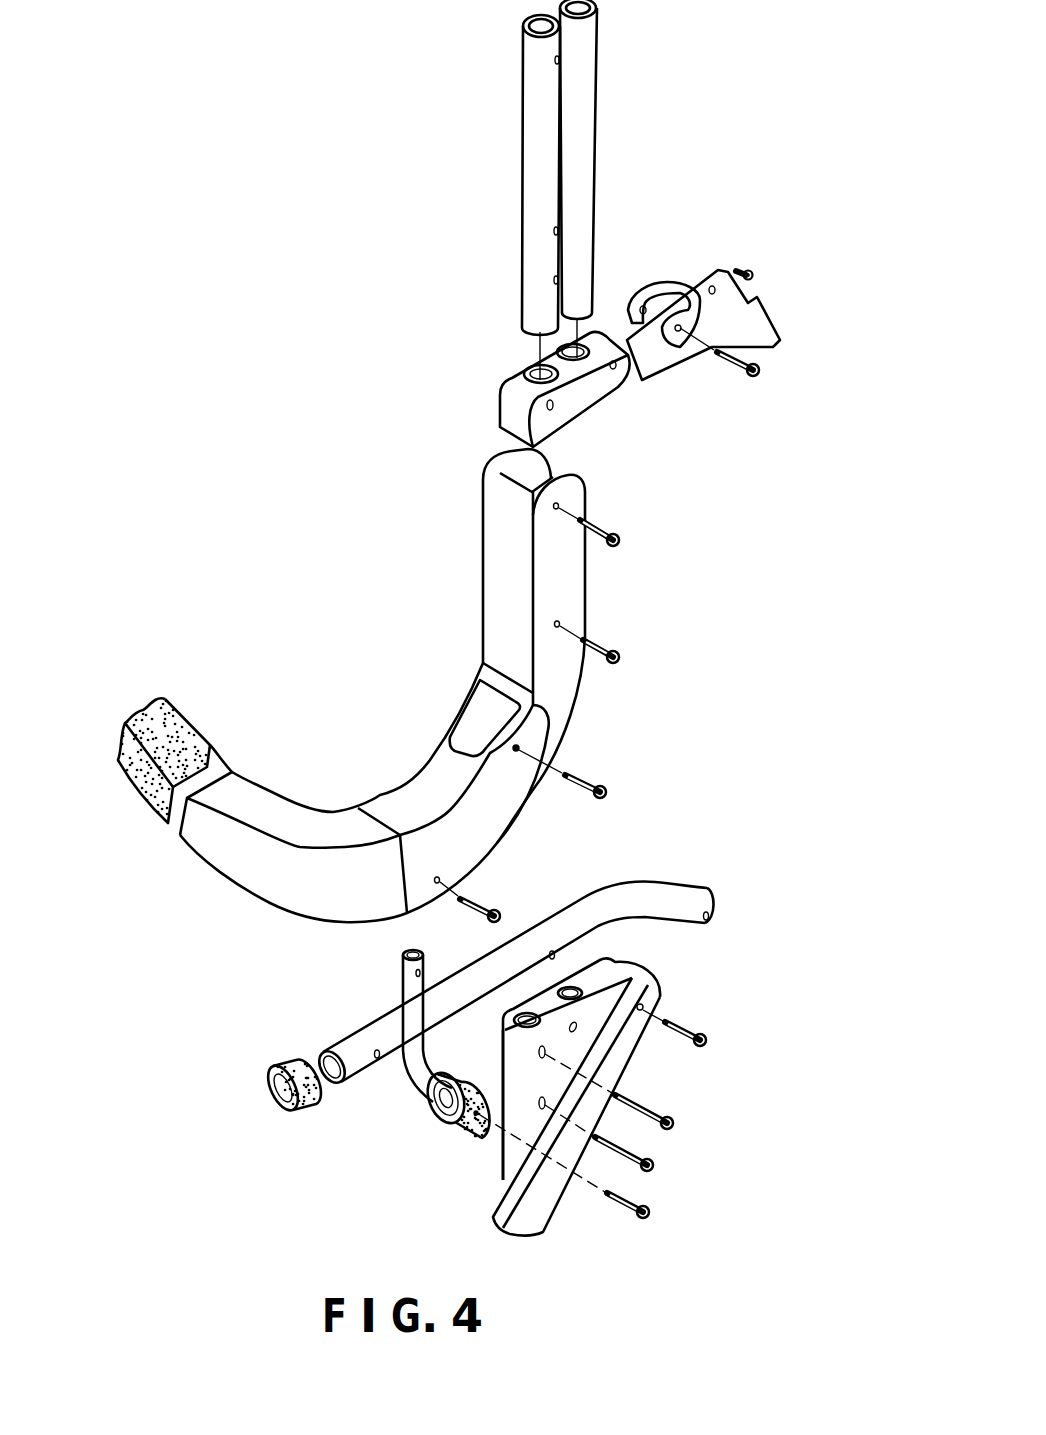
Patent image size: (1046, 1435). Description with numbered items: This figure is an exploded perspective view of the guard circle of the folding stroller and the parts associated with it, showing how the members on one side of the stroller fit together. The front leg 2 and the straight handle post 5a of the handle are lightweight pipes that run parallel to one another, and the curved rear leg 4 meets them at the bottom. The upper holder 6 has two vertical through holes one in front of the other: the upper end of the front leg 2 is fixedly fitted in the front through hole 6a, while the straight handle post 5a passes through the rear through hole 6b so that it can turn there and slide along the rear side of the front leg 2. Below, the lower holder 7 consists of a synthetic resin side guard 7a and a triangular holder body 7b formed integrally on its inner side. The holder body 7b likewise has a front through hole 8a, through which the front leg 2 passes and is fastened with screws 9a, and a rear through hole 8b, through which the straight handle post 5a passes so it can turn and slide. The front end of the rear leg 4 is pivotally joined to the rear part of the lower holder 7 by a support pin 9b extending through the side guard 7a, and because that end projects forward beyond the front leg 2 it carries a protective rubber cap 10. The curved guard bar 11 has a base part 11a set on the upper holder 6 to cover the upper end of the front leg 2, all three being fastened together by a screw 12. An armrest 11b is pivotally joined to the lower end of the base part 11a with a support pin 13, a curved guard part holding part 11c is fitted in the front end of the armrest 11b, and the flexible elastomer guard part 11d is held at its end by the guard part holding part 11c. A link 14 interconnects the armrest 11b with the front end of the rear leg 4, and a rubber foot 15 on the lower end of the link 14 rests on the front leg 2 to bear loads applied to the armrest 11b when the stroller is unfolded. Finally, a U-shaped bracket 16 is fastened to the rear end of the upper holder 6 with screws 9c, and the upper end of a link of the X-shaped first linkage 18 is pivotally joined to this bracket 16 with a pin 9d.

The front leg 2 is at (525, 169).
The straight handle post 5a is at (585, 130).
The rear leg 4 is at (637, 918).
The upper holder 6 is at (508, 397).
The front through hole 6a is at (536, 366).
The rear through hole 6b is at (585, 358).
The lower holder 7 is at (487, 1173).
The side guard 7a is at (561, 1202).
The holder body 7b is at (505, 1090).
The front through hole 8a is at (530, 1013).
The rear through hole 8b is at (568, 987).
The screw 9a is at (652, 1103).
The support pin 9b is at (672, 1025).
The screw 9c is at (715, 357).
The pin 9d is at (740, 268).
The protective rubber cap 10 is at (310, 1105).
The guard bar 11 is at (408, 742).
The base part 11a is at (481, 630).
The armrest 11b is at (392, 787).
The guard part holding part 11c is at (309, 811).
The guard part 11d is at (218, 747).
The screw 12 is at (620, 527).
The support pin 13 is at (580, 778).
The link 14 is at (405, 1003).
The rubber foot 15 is at (457, 1128).
The U-shaped bracket 16 is at (655, 284).
The first linkage 18 is at (760, 308).